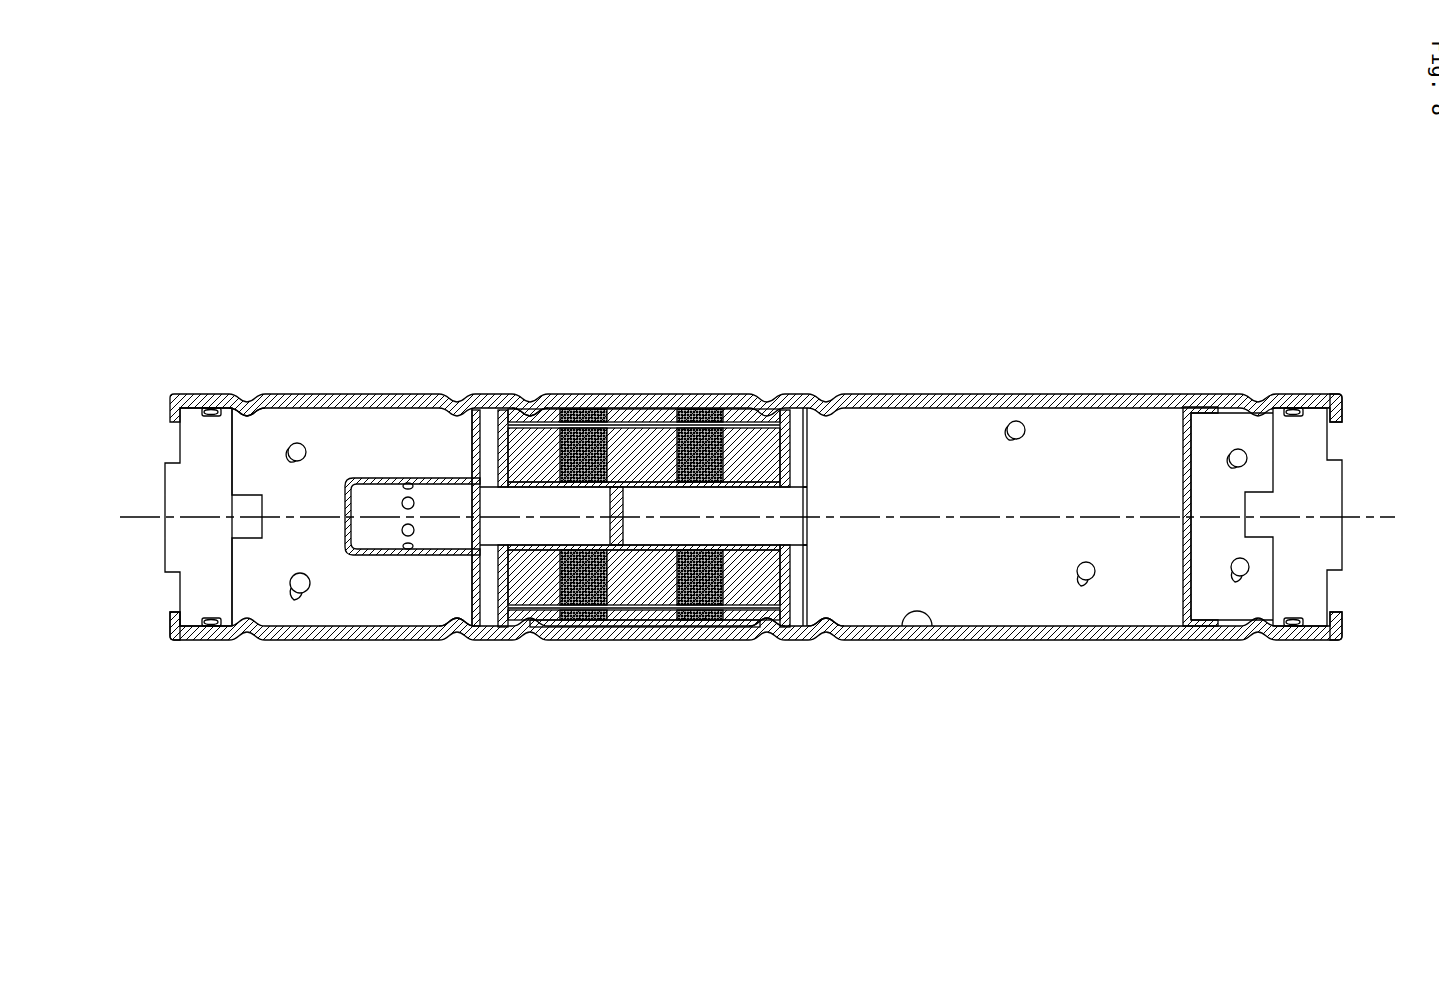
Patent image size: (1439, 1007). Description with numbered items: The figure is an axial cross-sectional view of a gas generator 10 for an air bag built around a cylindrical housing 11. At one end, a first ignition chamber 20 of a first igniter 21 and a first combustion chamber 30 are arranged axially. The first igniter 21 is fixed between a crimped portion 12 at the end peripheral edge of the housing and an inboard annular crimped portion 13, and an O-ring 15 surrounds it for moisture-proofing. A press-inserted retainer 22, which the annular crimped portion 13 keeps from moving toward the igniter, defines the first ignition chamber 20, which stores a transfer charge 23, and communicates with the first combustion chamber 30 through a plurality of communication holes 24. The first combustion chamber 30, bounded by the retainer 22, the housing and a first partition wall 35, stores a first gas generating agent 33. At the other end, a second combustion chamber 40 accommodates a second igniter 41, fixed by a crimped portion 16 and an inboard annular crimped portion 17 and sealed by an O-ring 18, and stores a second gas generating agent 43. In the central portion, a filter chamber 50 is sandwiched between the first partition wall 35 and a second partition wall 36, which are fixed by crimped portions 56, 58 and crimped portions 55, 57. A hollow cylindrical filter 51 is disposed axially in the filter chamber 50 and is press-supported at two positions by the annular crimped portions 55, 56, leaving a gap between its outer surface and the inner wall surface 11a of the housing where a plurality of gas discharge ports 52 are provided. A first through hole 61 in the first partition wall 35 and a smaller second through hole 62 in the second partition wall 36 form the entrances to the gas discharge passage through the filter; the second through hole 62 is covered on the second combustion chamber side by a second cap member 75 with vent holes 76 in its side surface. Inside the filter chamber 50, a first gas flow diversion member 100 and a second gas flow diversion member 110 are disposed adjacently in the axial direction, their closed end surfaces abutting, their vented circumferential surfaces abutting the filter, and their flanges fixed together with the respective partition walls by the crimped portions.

The gas generator 10 is at (740, 336).
The cylindrical housing 11 is at (988, 397).
The inner wall surface 11a is at (920, 640).
The crimped portion 12 is at (1342, 620).
The annular crimped portion 13 is at (1292, 636).
The O-ring 15 is at (1298, 400).
The crimped portion 16 is at (170, 622).
The annular crimped portion 17 is at (240, 398).
The O-ring 18 is at (210, 630).
The first ignition chamber 20 is at (1232, 418).
The first igniter 21 is at (1293, 517).
The retainer 22 is at (1185, 627).
The transfer charge 23 is at (1237, 580).
The communication holes 24 is at (1180, 452).
The first combustion chamber 30 is at (995, 466).
The first gas generating agent 33 is at (1082, 590).
The first partition wall 35 is at (795, 628).
The second partition wall 36 is at (490, 405).
The second combustion chamber 40 is at (352, 517).
The second igniter 41 is at (213, 517).
The second gas generating agent 43 is at (290, 598).
The filter chamber 50 is at (630, 565).
The hollow cylindrical filter 51 is at (535, 610).
The gas discharge ports 52 is at (643, 400).
The annular crimped portion 55 is at (527, 403).
The annular crimped portion 56 is at (767, 632).
The crimped portion 57 is at (455, 635).
The crimped portion 58 is at (828, 632).
The first through hole 61 is at (800, 482).
The second through hole 62 is at (483, 503).
The second cap member 75 is at (365, 562).
The vent holes 76 is at (408, 555).
The first gas flow diversion member 100 is at (663, 516).
The second gas flow diversion member 110 is at (643, 516).